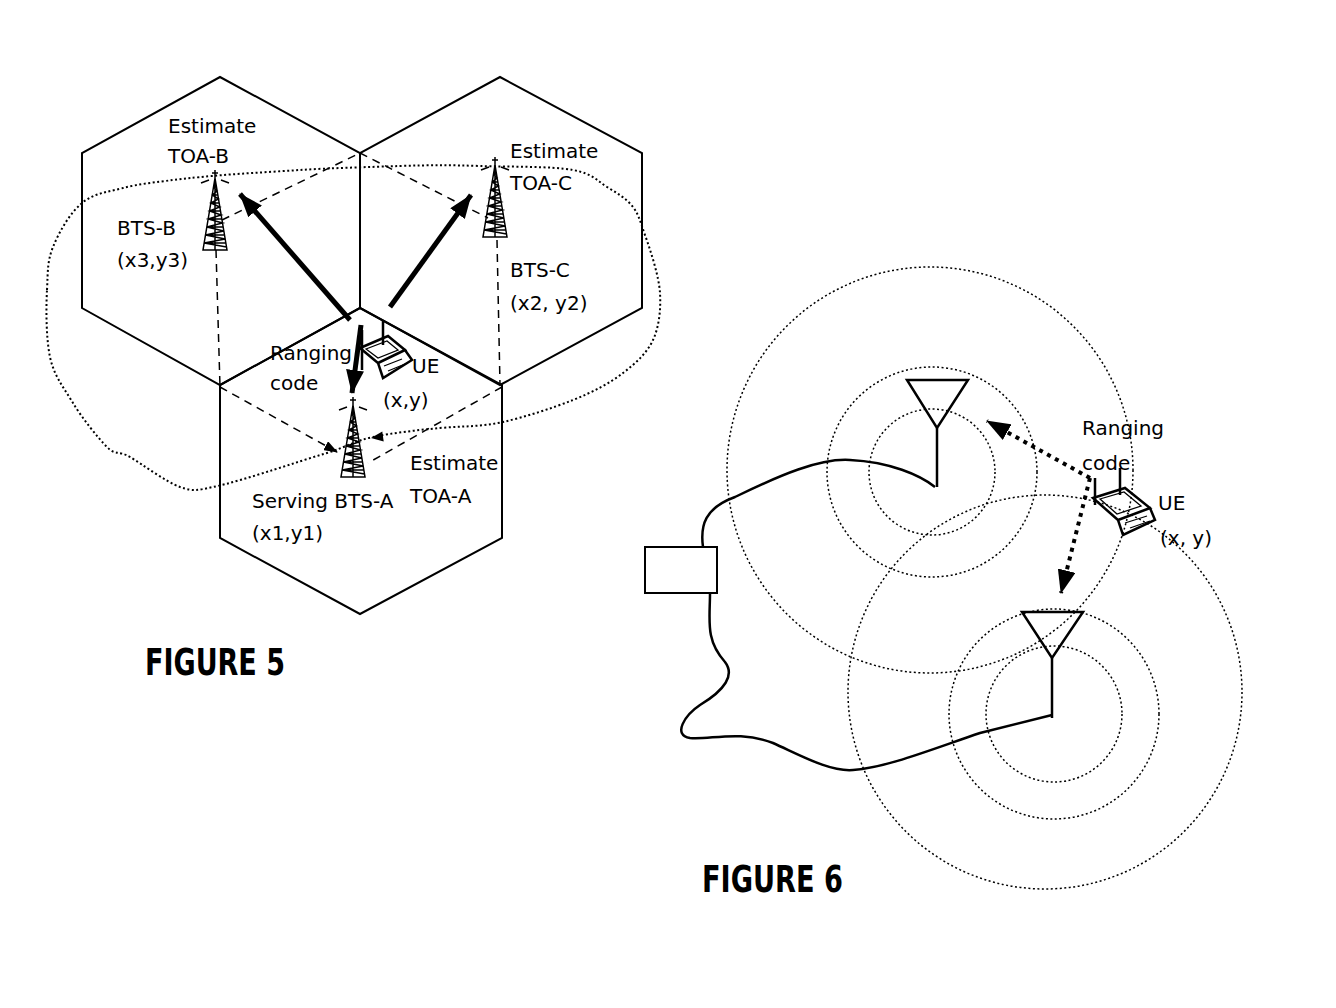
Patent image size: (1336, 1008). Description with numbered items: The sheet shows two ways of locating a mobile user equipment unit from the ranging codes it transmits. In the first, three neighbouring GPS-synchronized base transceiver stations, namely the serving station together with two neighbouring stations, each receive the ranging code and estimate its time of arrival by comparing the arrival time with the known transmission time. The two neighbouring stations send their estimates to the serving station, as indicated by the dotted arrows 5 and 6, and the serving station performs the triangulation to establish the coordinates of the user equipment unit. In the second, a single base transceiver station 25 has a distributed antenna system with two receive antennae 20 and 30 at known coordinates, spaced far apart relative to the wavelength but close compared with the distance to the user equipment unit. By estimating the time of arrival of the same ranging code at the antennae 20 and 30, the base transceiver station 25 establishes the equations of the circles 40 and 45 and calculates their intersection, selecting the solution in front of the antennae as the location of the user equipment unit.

In FIG. 5, the dotted arrow 5 is at (130, 453).
In FIG. 5, the dotted arrow 6 is at (660, 265).
In FIG. 6, the receive antenna 20 is at (945, 380).
In FIG. 6, the BTS 25 is at (645, 565).
In FIG. 6, the receive antenna 30 is at (1075, 630).
In FIG. 6, the circle 40 is at (1017, 283).
In FIG. 6, the circle 45 is at (1235, 628).